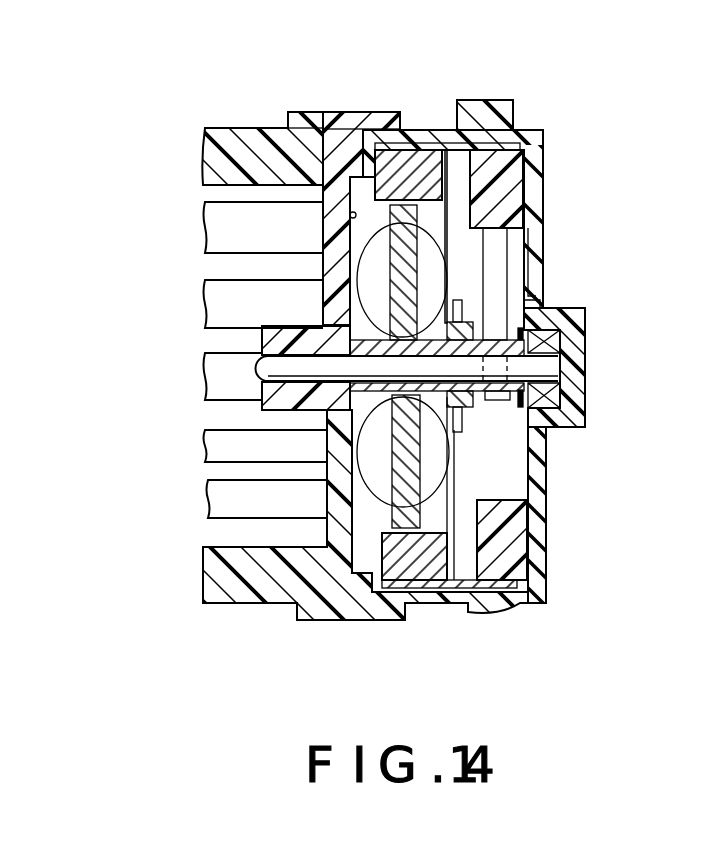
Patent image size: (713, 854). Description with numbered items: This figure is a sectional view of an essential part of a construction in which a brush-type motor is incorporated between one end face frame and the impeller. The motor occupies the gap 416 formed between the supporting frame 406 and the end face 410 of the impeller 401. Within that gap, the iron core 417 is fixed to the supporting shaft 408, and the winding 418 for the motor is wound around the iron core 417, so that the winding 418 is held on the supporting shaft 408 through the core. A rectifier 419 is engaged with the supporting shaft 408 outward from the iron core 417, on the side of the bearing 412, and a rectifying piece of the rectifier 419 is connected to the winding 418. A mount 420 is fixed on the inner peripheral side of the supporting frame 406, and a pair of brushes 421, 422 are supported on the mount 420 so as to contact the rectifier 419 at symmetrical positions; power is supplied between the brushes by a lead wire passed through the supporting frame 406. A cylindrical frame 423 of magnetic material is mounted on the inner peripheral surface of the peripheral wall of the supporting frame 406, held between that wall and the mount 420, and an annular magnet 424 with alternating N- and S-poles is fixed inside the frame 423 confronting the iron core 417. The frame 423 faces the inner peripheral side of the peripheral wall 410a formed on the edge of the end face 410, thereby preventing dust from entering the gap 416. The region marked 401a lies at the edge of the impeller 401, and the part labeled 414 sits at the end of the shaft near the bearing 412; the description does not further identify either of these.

The impeller 401 is at (227, 125).
The housing boss 401a is at (336, 112).
The peripheral wall 410a is at (377, 118).
The end face 410 is at (350, 215).
The supporting frame 406 is at (542, 146).
The cylindrical frame 423 is at (428, 133).
The gap 416 is at (457, 167).
The iron core 417 is at (445, 210).
The mount 420 is at (522, 246).
The brush 421 is at (498, 287).
The brush 422 is at (520, 367).
The supporting shaft 408 is at (283, 335).
The rectifier 419 is at (485, 400).
The bearing 412 is at (558, 390).
The end cap 414 is at (572, 415).
The winding 418 is at (372, 272).
The annular magnet 424 is at (427, 563).